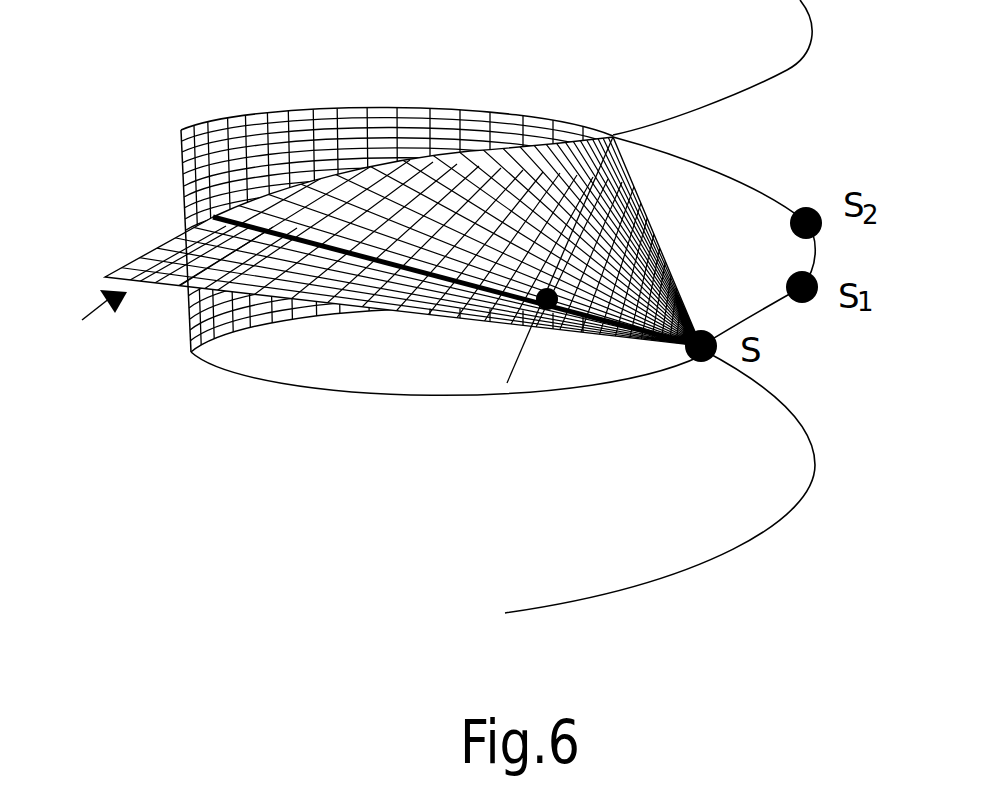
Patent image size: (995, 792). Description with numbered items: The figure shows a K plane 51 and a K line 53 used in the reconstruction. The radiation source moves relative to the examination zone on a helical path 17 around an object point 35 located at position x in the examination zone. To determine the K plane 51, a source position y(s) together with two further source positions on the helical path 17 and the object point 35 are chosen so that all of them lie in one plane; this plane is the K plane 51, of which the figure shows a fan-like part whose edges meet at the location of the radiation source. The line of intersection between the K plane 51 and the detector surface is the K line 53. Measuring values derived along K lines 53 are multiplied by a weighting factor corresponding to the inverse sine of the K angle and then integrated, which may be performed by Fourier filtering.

The helical path 17 is at (808, 438).
The object point 35 is at (537, 311).
The K plane 51 is at (82, 321).
The K line 53 is at (183, 234).